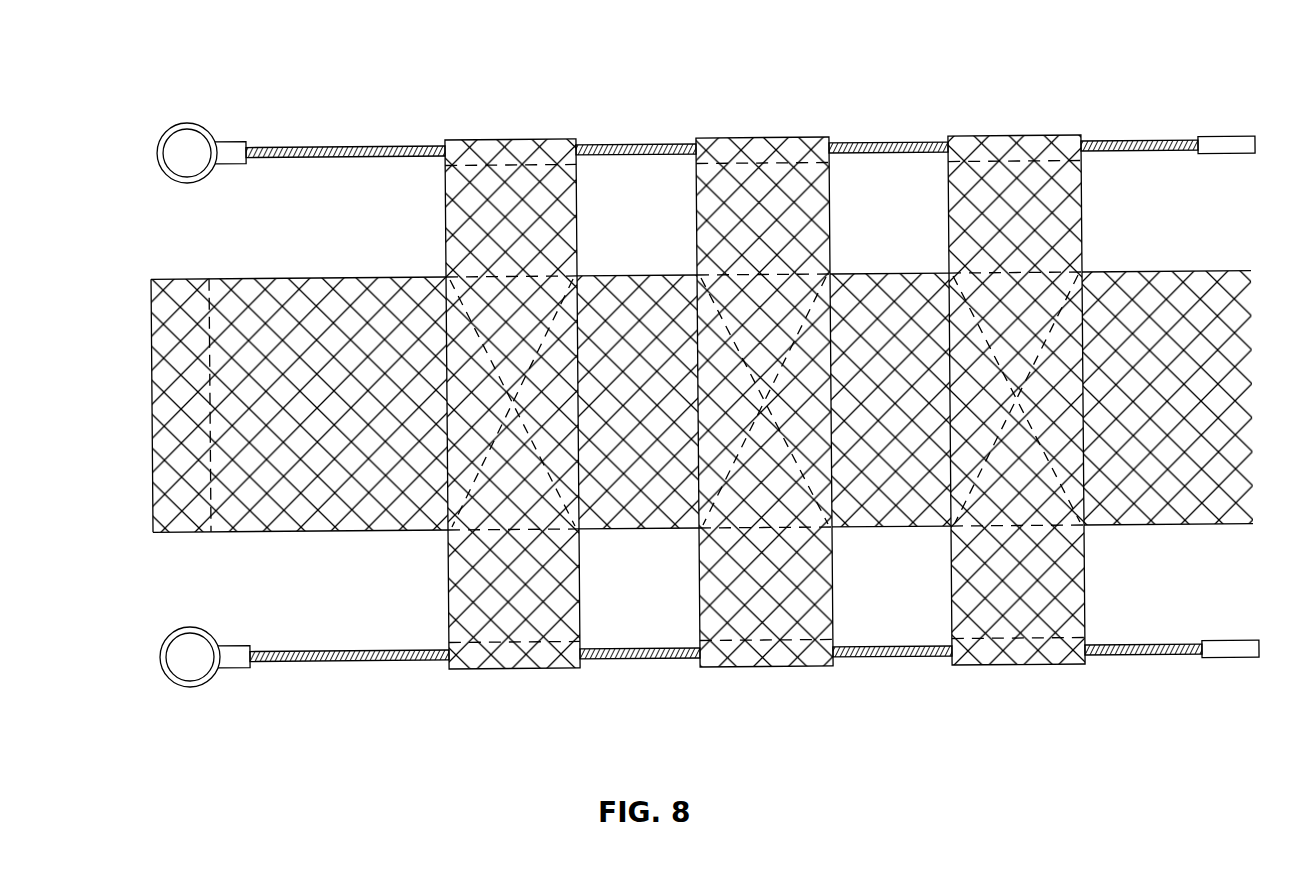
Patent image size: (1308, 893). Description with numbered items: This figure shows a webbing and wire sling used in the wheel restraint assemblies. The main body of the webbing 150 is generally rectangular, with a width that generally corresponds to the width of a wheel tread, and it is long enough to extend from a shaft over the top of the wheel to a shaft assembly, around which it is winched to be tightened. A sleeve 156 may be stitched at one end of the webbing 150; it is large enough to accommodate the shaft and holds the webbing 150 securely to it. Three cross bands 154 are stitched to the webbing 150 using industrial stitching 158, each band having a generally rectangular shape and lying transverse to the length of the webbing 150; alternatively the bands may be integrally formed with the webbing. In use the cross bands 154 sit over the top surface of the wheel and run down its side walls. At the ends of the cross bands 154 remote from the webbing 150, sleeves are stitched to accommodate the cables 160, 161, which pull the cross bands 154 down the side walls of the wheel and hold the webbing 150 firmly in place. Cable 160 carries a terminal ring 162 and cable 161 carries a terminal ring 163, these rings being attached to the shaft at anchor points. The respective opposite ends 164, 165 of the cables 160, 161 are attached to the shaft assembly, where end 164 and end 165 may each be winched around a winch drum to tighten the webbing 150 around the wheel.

The webbing 150 is at (691, 422).
The cross bands 154 is at (560, 200).
The sleeve 156 is at (186, 296).
The industrial stitching 158 is at (505, 398).
The cable 160 is at (634, 666).
The cable 161 is at (885, 143).
The terminal ring 162 is at (203, 634).
The terminal ring 163 is at (199, 187).
The opposite end of cable 164 is at (1226, 660).
The opposite end of cable 165 is at (1230, 142).